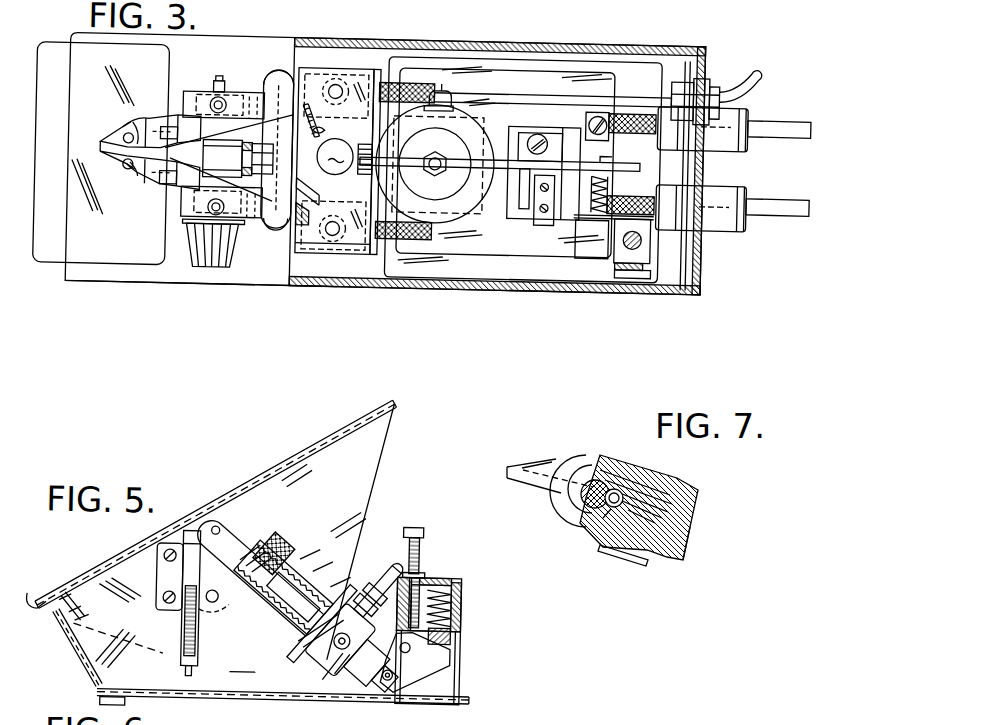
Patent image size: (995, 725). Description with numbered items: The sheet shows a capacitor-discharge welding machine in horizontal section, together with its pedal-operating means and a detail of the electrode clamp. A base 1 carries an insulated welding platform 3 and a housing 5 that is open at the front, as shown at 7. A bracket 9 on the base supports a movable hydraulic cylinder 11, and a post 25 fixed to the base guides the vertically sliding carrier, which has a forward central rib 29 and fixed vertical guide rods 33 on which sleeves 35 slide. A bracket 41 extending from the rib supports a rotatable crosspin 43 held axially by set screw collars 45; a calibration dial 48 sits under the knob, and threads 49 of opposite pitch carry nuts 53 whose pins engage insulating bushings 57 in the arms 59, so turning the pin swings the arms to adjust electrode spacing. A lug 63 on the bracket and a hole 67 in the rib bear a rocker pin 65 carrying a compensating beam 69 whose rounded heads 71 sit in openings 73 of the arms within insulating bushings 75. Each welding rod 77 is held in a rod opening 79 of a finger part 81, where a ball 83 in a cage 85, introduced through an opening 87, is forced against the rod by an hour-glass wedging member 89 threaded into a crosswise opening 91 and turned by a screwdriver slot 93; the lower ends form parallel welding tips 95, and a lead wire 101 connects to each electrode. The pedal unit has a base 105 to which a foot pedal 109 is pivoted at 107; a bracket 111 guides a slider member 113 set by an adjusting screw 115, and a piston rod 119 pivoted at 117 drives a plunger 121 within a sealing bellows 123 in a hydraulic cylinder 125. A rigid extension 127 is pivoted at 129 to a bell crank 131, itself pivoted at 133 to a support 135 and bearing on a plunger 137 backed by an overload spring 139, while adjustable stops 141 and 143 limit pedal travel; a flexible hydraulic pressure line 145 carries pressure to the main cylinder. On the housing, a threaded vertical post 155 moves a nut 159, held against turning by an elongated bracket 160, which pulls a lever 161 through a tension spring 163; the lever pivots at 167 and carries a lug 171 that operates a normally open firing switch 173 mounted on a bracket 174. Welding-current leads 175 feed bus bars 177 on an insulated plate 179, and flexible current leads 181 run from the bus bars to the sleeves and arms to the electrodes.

In FIG. 3, the base 1 is at (168, 281).
In FIG. 3, the insulated welding platform 3 is at (66, 262).
In FIG. 3, the housing 5 is at (545, 42).
In FIG. 3, the front opening 7 is at (296, 53).
In FIG. 3, the bracket 9 is at (505, 143).
In FIG. 3, the hydraulic cylinder 11 is at (470, 210).
In FIG. 3, the post 25 is at (335, 156).
In FIG. 3, the central rib 29 is at (318, 192).
In FIG. 3, the guide rods 33 is at (336, 85).
In FIG. 3, the sleeve 35 is at (377, 70).
In FIG. 3, the bracket 41 is at (241, 157).
In FIG. 3, the crosspin 43 is at (205, 160).
In FIG. 3, the set screw collars 45 is at (192, 97).
In FIG. 3, the calibration dial 48 is at (194, 250).
In FIG. 3, the threads 49 is at (214, 90).
In FIG. 3, the nuts 53 is at (198, 98).
In FIG. 3, the insulating bushings 57 is at (219, 100).
In FIG. 3, the arms 59 is at (252, 100).
In FIG. 3, the lug 63 is at (262, 108).
In FIG. 3, the rocker pin 65 is at (268, 160).
In FIG. 3, the hole 67 is at (318, 134).
In FIG. 3, the compensating beam 69 is at (312, 106).
In FIG. 3, the rounded head 71 is at (280, 80).
In FIG. 3, the opening 73 is at (312, 255).
In FIG. 3, the insulating bushings 75 is at (326, 289).
In FIG. 3, the welding rods 77 is at (120, 141).
In FIG. 7, the welding rods 77 is at (533, 470).
In FIG. 7, the rod opening 79 is at (597, 472).
In FIG. 3, the finger part 81 is at (141, 131).
In FIG. 7, the finger part 81 is at (680, 515).
In FIG. 7, the ball 83 is at (598, 510).
In FIG. 7, the cage 85 is at (603, 518).
In FIG. 7, the opening 87 is at (556, 503).
In FIG. 3, the wedging member 89 is at (124, 131).
In FIG. 7, the wedging member 89 is at (620, 556).
In FIG. 7, the opening 91 is at (680, 553).
In FIG. 7, the screwdriver slot 93 is at (636, 562).
In FIG. 3, the welding tip 95 is at (99, 152).
In FIG. 7, the welding tip 95 is at (506, 472).
In FIG. 3, the lead wire 101 is at (170, 122).
In FIG. 5, the base 105 is at (165, 652).
In FIG. 5, the pivot 107 is at (230, 612).
In FIG. 5, the foot pedal 109 is at (270, 468).
In FIG. 5, the bracket 111 is at (156, 578).
In FIG. 5, the slider member 113 is at (188, 532).
In FIG. 5, the adjusting screw 115 is at (185, 640).
In FIG. 5, the pivot 117 is at (220, 527).
In FIG. 5, the piston rod 119 is at (266, 565).
In FIG. 5, the plunger 121 is at (298, 570).
In FIG. 5, the sealing bellows 123 is at (282, 540).
In FIG. 5, the hydraulic cylinder 125 is at (318, 605).
In FIG. 5, the rigid extension 127 is at (353, 662).
In FIG. 5, the pivot 129 is at (391, 679).
In FIG. 5, the bell crank 131 is at (405, 666).
In FIG. 5, the pivot 133 is at (419, 653).
In FIG. 5, the support 135 is at (460, 678).
In FIG. 5, the plunger 137 is at (452, 634).
In FIG. 5, the overload spring 139 is at (462, 599).
In FIG. 5, the adjustable stop 141 is at (50, 618).
In FIG. 5, the adjustable stop 143 is at (413, 524).
In FIG. 3, the flexible hydraulic pressure line 145 is at (742, 80).
In FIG. 5, the flexible hydraulic pressure line 145 is at (372, 576).
In FIG. 3, the threaded vertical post 155 is at (625, 235).
In FIG. 3, the nut 159 is at (642, 240).
In FIG. 3, the elongated bracket 160 is at (636, 274).
In FIG. 3, the lever 161 is at (610, 150).
In FIG. 3, the tension spring 163 is at (610, 186).
In FIG. 3, the pivot 167 is at (364, 145).
In FIG. 3, the lug 171 is at (522, 180).
In FIG. 3, the firing switch 173 is at (540, 222).
In FIG. 3, the bracket 174 is at (556, 168).
In FIG. 3, the welding-current leads 175 is at (784, 190).
In FIG. 3, the bus bars 177 is at (612, 74).
In FIG. 3, the insulated plate 179 is at (588, 57).
In FIG. 3, the flexible current leads 181 is at (420, 83).